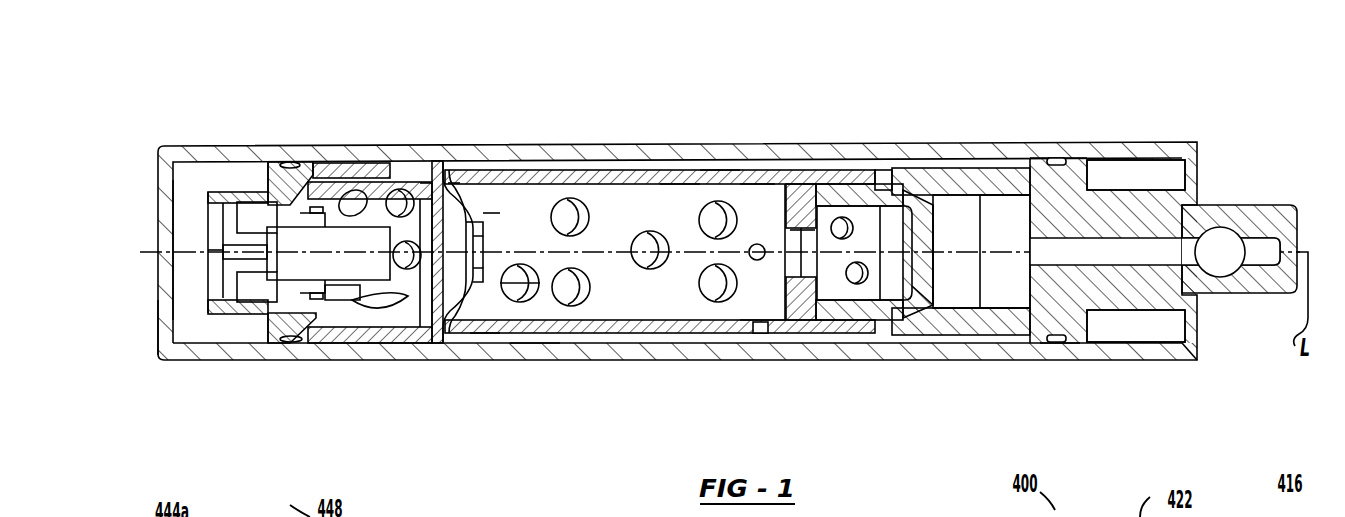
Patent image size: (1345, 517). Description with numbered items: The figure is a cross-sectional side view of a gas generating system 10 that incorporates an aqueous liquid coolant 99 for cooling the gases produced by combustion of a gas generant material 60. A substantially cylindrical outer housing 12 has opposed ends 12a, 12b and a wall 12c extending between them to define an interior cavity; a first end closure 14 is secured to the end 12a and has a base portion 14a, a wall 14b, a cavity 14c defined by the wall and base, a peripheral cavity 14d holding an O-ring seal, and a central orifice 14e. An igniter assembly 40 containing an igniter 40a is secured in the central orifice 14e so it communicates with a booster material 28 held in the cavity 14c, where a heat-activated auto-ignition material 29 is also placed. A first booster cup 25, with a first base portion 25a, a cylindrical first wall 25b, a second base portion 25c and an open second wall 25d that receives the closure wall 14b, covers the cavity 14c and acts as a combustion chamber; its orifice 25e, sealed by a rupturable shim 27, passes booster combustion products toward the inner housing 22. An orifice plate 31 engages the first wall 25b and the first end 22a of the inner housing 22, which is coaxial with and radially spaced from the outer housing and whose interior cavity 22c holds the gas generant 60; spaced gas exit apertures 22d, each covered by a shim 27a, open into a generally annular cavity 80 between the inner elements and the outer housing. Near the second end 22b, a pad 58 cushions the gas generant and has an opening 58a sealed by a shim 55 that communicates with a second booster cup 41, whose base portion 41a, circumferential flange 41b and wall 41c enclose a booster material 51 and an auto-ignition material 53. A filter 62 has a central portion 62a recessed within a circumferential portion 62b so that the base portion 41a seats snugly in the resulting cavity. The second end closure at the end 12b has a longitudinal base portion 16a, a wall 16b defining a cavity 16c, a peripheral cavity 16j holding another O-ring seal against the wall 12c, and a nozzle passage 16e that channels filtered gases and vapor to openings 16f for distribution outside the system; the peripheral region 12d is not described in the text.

The gas generating system 10 is at (650, 457).
The outer housing 12 is at (398, 348).
The first end of outer housing 12a is at (161, 360).
The second end of outer housing 12b is at (1198, 360).
The housing wall 12c is at (530, 348).
The housing bore 12d is at (1063, 347).
The first end closure 14 is at (258, 175).
The base portion of first end closure 14a is at (280, 313).
The wall of first end closure 14b is at (341, 177).
The end closure cavity 14c is at (313, 313).
The peripheral cavity of first end closure 14d is at (278, 180).
The central orifice of first end closure 14e is at (162, 192).
The longitudinal base portion of second end closure 16a is at (1050, 277).
The wall of second end closure 16b is at (1053, 160).
The cavity of second end closure 16c is at (1057, 347).
The central gas flow passage 16e is at (1170, 245).
The openings in second end closure 16f is at (1224, 233).
The peripheral cavity of second end closure 16j is at (1110, 192).
The inner housing 22 is at (559, 339).
The first end of inner housing 22a is at (483, 328).
The second end of inner housing 22b is at (862, 190).
The interior cavity of inner housing 22c is at (612, 292).
The gas exit apertures 22d is at (760, 328).
The first booster cup 25 is at (405, 320).
The first base portion of first booster cup 25a is at (483, 247).
The first wall of first booster cup 25b is at (470, 213).
The second base portion of first booster cup 25c is at (472, 193).
The second wall of first booster cup 25d is at (403, 170).
The booster cup orifice 25e is at (500, 225).
The rupturable seal or shim 27 is at (448, 285).
The rupturable seal or shim for apertures 27a is at (757, 170).
The booster material 28 is at (367, 193).
The auto-ignition material 29 is at (360, 317).
The orifice plate 31 is at (455, 198).
The igniter assembly 40 is at (213, 295).
The igniter 40a is at (337, 315).
The second booster cup 41 is at (895, 292).
The base portion of second booster cup 41a is at (1027, 190).
The circumferential flange of second booster cup 41b is at (960, 227).
The wall of second booster cup 41c is at (878, 177).
The booster material in second booster cup 51 is at (852, 288).
The auto-ignition material in second booster cup 53 is at (902, 313).
The rupturable seal or shim for pad opening 55 is at (800, 210).
The cushion or pad 58 is at (808, 278).
The pad opening 58a is at (803, 270).
The gas generant material 60 is at (516, 303).
The filter 62 is at (983, 333).
The central portion of filter 62a is at (1000, 195).
The circumferential portion of filter 62b is at (955, 335).
The annular cavity 80 is at (683, 167).
The aqueous liquid coolant 99 is at (722, 170).